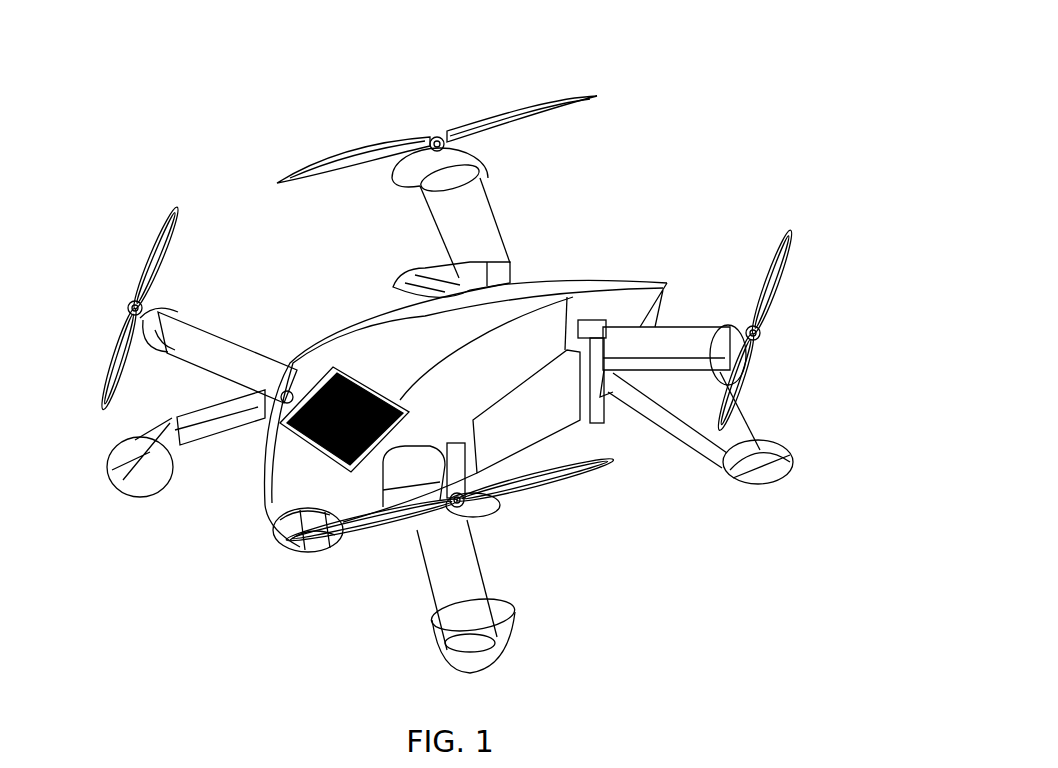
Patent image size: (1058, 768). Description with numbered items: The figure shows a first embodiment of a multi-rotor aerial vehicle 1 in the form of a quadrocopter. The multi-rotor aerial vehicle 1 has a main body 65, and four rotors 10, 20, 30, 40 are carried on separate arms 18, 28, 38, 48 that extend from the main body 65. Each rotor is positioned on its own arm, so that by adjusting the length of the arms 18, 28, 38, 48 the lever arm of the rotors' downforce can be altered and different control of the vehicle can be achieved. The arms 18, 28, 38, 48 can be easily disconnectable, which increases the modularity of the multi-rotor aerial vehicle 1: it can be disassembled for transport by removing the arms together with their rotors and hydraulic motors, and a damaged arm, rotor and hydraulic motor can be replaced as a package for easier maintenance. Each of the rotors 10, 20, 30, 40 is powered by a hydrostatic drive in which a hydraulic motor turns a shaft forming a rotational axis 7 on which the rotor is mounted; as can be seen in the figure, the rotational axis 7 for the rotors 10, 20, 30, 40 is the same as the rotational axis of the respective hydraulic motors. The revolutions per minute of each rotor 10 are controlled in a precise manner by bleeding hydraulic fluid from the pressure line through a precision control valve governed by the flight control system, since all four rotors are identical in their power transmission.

The multi-rotor aerial vehicle 1 is at (695, 115).
The rotational axis 7 is at (438, 138).
The rotor 10 is at (563, 470).
The arm 18 is at (422, 476).
The rotor 20 is at (152, 262).
The arm 28 is at (197, 334).
The rotor 30 is at (768, 300).
The arm 38 is at (665, 343).
The rotor 40 is at (380, 145).
The arm 48 is at (463, 205).
The main body 65 is at (405, 336).